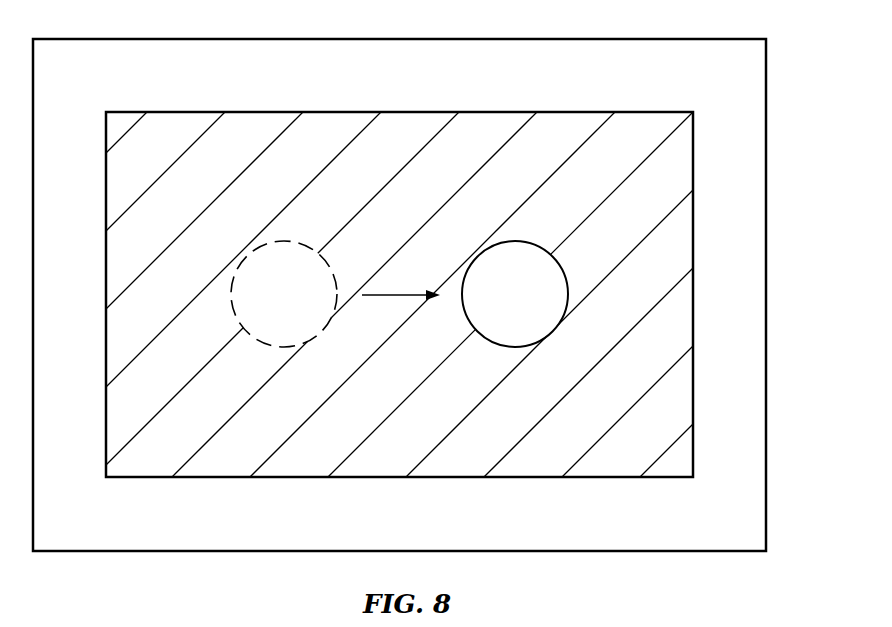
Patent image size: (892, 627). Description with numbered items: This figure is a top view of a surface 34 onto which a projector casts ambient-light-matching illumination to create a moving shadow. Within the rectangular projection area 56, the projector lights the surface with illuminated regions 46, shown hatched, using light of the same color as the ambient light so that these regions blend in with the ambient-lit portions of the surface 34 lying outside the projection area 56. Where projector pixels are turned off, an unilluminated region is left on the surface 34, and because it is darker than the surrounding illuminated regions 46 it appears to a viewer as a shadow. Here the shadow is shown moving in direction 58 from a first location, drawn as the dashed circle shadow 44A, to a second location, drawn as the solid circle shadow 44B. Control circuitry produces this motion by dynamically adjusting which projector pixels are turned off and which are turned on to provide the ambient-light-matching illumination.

The surface 34 is at (738, 382).
The projection area 56 is at (693, 184).
The illuminated regions 46 is at (592, 460).
The shadow 44A is at (303, 243).
The shadow 44B is at (538, 244).
The direction 58 is at (402, 292).